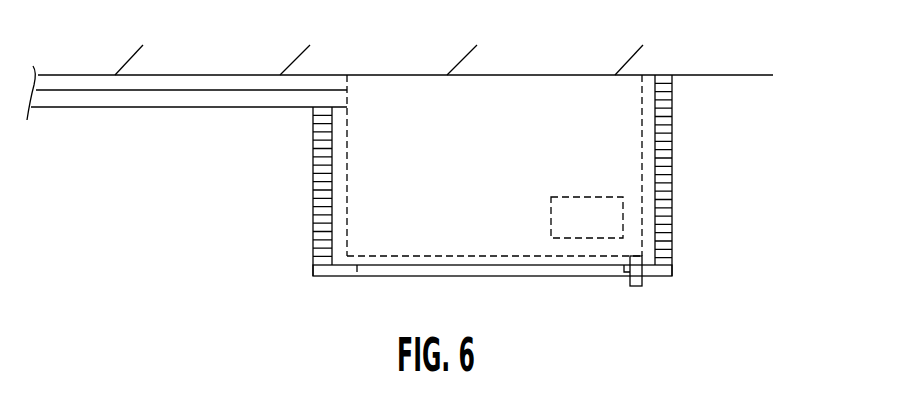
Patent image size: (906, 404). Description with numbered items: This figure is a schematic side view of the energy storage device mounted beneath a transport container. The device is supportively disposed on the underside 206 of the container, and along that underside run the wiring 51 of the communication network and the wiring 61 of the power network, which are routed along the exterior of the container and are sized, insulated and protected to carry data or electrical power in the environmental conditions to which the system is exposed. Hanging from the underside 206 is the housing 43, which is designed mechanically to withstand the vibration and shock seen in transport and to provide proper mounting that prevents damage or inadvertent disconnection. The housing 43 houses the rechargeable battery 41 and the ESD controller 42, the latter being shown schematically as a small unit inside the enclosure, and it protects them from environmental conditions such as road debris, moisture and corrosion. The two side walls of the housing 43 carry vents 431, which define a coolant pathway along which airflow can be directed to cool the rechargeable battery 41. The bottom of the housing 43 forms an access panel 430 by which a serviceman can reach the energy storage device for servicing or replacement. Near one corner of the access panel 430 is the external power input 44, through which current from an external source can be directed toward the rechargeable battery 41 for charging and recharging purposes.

The underside 206 is at (730, 80).
The wiring 61 is at (78, 80).
The wiring 51 is at (152, 100).
The rechargeable battery 41 is at (642, 146).
The ESD controller 42 is at (623, 215).
The housing 43 is at (495, 204).
The vents 431 is at (317, 235).
The access panel 430 is at (442, 270).
The external power input 44 is at (641, 281).